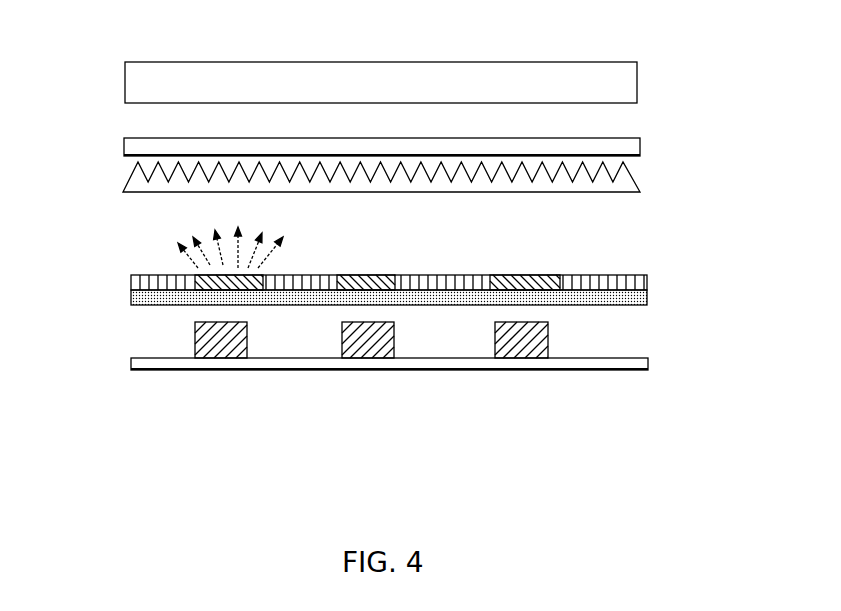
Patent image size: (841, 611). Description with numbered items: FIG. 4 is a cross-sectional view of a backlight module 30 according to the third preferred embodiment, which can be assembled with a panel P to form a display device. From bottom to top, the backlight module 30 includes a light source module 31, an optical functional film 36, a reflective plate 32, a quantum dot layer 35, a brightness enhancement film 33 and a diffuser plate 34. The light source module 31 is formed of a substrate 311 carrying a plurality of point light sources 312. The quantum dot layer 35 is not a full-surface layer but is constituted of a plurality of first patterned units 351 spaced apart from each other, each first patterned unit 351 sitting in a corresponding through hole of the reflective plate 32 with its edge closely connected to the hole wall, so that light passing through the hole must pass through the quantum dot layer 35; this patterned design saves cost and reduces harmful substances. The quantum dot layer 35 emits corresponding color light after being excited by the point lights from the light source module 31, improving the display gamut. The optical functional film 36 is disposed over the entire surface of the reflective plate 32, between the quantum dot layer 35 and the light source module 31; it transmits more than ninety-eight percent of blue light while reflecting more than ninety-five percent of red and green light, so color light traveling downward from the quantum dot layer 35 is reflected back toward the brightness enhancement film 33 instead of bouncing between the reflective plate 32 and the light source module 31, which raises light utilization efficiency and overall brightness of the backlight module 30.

The panel P is at (637, 73).
The backlight module 30 is at (85, 142).
The light source module 31 is at (663, 462).
The substrate 311 is at (608, 370).
The point light sources 312 is at (520, 360).
The reflective plate 32 is at (648, 282).
The brightness enhancement film 33 is at (640, 190).
The diffuser plate 34 is at (640, 145).
The quantum dot layer 35 is at (593, 202).
The first patterned units 351 is at (393, 278).
The optical functional film 36 is at (648, 303).